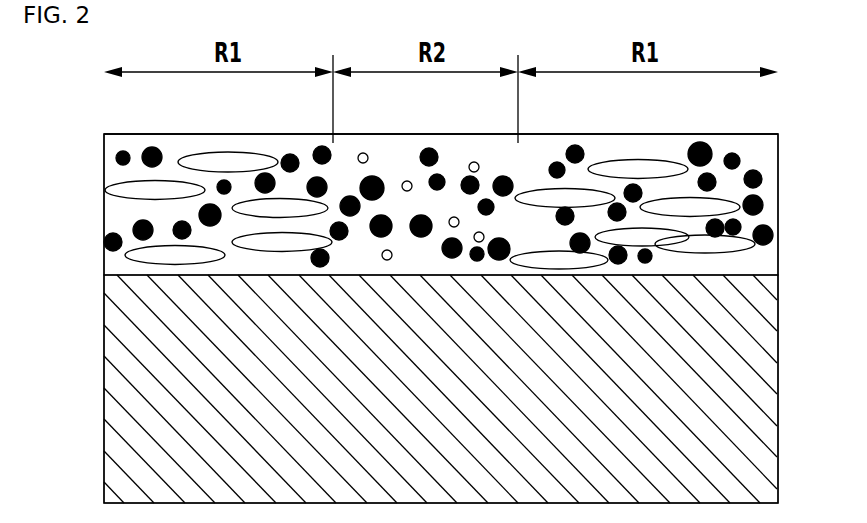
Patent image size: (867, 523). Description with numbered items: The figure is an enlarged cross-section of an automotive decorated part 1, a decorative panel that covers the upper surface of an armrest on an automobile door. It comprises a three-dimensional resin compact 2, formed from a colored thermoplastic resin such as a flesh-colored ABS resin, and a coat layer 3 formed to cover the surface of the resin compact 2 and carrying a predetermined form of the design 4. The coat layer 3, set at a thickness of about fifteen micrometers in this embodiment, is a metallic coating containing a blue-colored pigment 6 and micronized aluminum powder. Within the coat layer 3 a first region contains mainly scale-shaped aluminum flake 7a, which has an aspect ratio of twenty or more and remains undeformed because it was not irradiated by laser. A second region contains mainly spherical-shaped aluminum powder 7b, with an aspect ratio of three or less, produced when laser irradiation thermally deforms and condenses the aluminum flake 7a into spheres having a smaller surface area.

The automotive decorated part 1 is at (90, 123).
The resin compact 2 is at (778, 343).
The coat layer 3 is at (778, 204).
The design 4 is at (550, 128).
The pigment 6 is at (297, 154).
The aluminum flake 7a is at (236, 152).
The spherical-shaped aluminum powder 7b is at (407, 181).